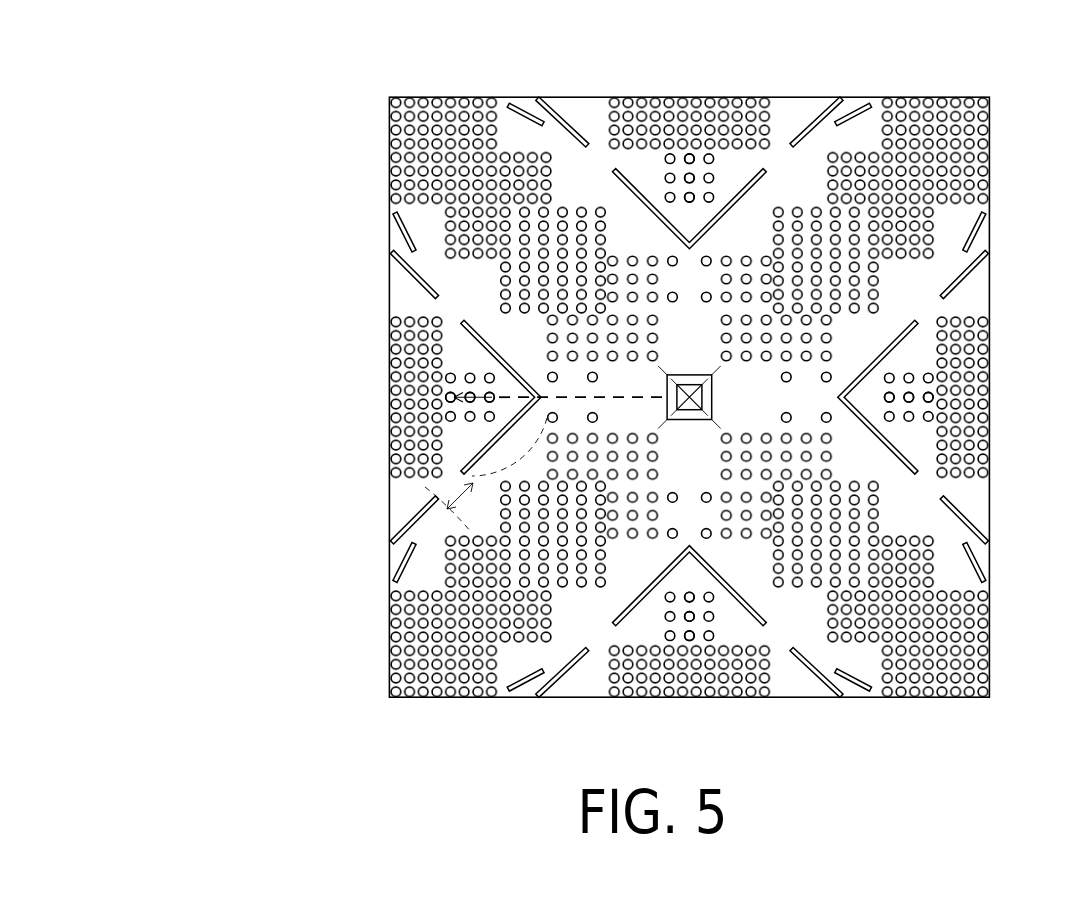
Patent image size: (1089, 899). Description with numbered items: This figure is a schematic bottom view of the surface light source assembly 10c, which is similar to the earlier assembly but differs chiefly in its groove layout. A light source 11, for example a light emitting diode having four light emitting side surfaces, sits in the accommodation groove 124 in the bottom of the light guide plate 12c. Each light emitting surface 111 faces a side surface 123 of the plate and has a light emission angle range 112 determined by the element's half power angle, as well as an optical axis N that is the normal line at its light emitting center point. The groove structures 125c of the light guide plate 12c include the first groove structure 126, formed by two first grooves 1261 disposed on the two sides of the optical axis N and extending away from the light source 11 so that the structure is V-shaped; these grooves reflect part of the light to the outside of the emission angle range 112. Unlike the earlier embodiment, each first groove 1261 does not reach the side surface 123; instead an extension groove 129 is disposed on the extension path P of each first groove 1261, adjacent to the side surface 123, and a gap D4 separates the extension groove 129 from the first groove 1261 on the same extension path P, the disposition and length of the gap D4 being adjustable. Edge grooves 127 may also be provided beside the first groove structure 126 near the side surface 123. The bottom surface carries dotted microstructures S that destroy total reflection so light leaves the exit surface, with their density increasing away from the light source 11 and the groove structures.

The surface light source assembly 10c is at (170, 122).
The light source 11 is at (693, 385).
The light emitting surfaces 111 is at (659, 384).
The light emission angle range 112 is at (595, 319).
The light guide plate 12c is at (538, 98).
The side surface 123 is at (380, 672).
The accommodation groove 124 is at (944, 289).
The groove structures 125c is at (212, 272).
The first groove structure 126 is at (270, 302).
The first grooves 1261 is at (462, 321).
The edge grooves 127 is at (392, 215).
The extension grooves 129 is at (391, 257).
The optical axis N is at (458, 472).
The extension path P is at (390, 567).
The gap D4 is at (488, 546).
The dotted microstructures S is at (396, 698).